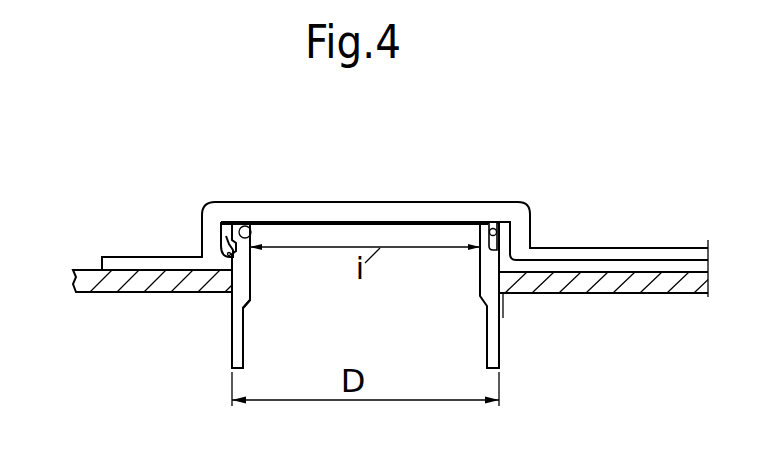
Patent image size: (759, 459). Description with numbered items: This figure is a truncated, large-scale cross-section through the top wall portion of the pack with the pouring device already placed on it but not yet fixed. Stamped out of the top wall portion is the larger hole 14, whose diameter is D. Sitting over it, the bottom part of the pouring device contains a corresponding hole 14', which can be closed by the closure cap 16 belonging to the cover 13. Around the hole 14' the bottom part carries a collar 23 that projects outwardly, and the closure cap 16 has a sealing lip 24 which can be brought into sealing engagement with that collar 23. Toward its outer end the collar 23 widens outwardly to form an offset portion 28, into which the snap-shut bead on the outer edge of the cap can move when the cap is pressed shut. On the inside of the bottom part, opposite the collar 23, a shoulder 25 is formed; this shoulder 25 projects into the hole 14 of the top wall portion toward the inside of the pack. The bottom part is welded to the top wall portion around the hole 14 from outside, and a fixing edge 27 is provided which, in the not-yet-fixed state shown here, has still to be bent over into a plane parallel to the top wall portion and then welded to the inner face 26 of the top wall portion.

The cover 13 is at (662, 240).
The larger hole 14 is at (367, 309).
The hole in the bottom part 14' is at (289, 300).
The closure cap 16 is at (388, 219).
The collar 23 is at (498, 228).
The sealing lip 24 is at (251, 225).
The shoulder 25 is at (243, 293).
The inner face 26 is at (594, 296).
The fixing edge 27 is at (238, 343).
The offset portion 28 is at (225, 248).